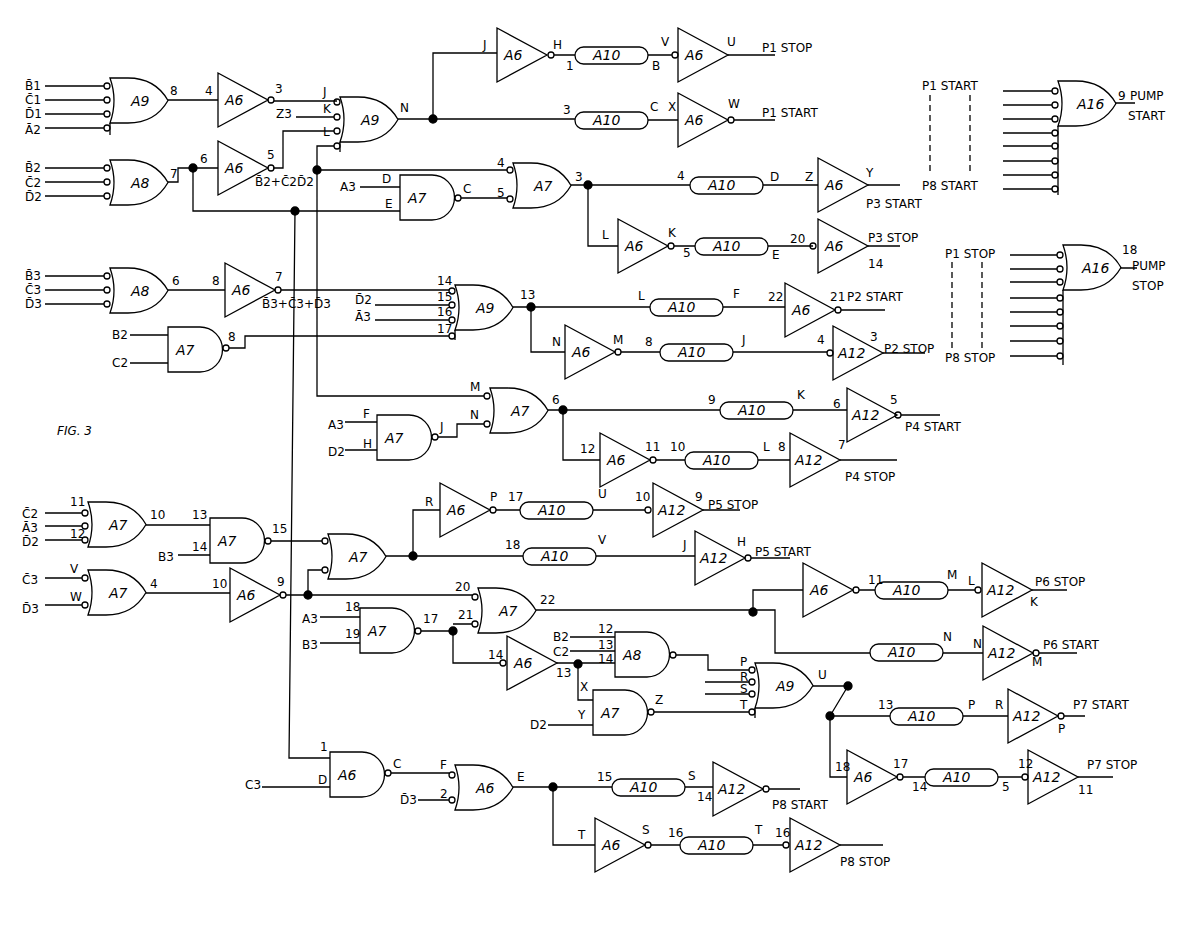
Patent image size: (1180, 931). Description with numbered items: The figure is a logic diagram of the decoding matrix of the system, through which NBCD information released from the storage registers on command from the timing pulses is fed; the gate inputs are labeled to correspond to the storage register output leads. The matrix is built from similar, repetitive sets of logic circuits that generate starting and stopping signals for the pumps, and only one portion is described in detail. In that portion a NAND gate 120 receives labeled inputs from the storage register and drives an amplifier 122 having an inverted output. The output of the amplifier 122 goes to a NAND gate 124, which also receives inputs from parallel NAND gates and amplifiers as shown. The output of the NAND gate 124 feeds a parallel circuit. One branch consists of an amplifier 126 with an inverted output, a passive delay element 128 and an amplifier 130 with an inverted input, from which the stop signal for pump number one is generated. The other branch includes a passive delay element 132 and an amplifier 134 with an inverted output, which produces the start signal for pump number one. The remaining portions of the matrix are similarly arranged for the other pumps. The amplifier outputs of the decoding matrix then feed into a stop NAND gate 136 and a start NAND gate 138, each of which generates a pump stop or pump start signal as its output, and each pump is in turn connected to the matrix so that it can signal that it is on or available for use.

The NAND gate 120 is at (144, 78).
The amplifier 122 is at (255, 88).
The NAND gate 124 is at (378, 97).
The amplifier 126 is at (535, 32).
The passive delay element 128 is at (605, 47).
The amplifier 130 is at (718, 32).
The passive delay element 132 is at (620, 96).
The amplifier 134 is at (710, 107).
The stop NAND gate 136 is at (1088, 82).
The start NAND gate 138 is at (1092, 245).